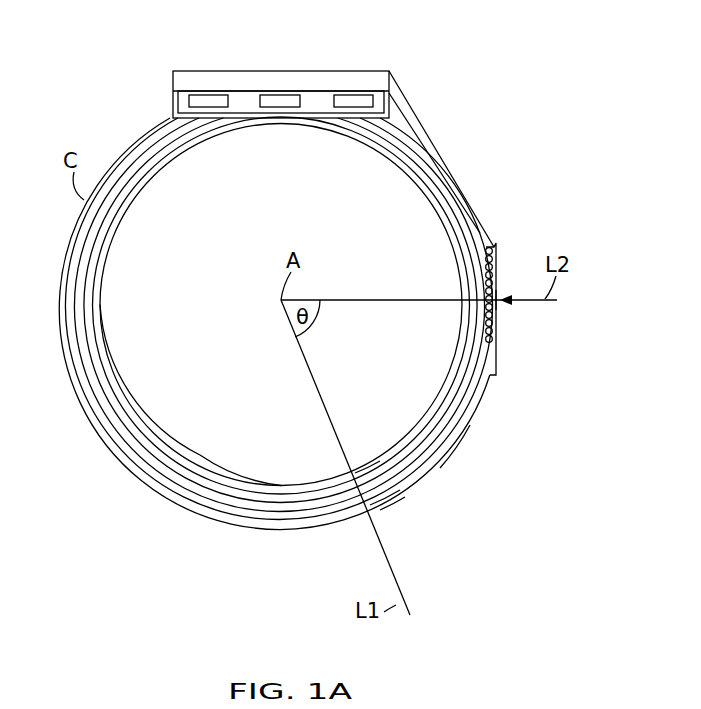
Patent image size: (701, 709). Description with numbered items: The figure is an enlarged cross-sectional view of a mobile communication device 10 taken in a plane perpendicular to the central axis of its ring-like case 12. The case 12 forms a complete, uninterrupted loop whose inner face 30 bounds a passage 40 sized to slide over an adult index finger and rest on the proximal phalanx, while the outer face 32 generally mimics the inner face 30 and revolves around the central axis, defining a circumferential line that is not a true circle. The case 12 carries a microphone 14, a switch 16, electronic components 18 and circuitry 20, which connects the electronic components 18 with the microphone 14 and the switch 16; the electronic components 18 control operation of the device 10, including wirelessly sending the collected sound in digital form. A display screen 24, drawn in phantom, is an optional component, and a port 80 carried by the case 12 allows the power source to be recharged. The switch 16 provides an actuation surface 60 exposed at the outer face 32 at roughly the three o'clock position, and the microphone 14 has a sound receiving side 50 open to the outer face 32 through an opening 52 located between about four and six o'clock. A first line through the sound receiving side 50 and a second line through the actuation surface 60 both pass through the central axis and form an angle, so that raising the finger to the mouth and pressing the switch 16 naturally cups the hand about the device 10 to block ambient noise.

The mobile communication device 10 is at (112, 52).
The case 12 is at (103, 442).
The microphone 14 is at (395, 502).
The switch 16 is at (508, 306).
The electronic components 18 is at (352, 92).
The circuitry 20 is at (82, 288).
The display screen 24 is at (240, 69).
The inner face 30 is at (138, 417).
The outer face 32 is at (458, 438).
The passage 40 is at (230, 437).
The sound receiving side 50 is at (372, 506).
The opening 52 is at (392, 496).
The actuation surface 60 is at (499, 262).
The port 80 is at (197, 93).